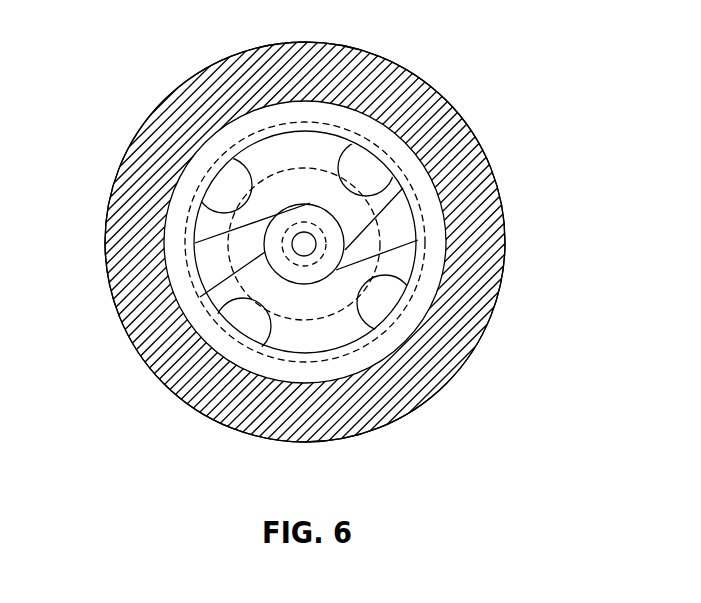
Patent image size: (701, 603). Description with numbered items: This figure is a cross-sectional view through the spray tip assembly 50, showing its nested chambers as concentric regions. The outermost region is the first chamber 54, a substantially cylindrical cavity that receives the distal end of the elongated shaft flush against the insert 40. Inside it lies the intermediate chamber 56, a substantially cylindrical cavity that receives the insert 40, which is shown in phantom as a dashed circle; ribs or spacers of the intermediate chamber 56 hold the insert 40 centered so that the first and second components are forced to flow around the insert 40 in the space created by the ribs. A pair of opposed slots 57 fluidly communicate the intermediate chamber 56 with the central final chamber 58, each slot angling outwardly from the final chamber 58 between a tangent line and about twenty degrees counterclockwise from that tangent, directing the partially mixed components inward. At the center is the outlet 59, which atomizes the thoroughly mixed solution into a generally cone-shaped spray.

The insert 40 is at (283, 167).
The spray tip assembly 50 is at (505, 238).
The first chamber 54 is at (405, 100).
The intermediate chamber 56 is at (338, 46).
The slots 57 is at (213, 262).
The final chamber 58 is at (327, 207).
The outlet 59 is at (304, 257).